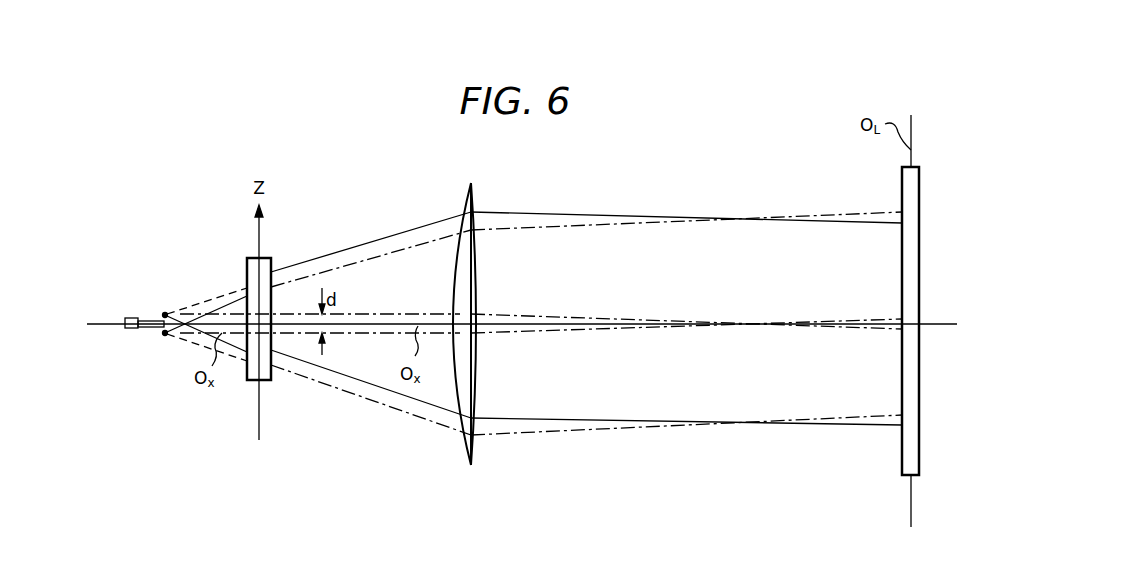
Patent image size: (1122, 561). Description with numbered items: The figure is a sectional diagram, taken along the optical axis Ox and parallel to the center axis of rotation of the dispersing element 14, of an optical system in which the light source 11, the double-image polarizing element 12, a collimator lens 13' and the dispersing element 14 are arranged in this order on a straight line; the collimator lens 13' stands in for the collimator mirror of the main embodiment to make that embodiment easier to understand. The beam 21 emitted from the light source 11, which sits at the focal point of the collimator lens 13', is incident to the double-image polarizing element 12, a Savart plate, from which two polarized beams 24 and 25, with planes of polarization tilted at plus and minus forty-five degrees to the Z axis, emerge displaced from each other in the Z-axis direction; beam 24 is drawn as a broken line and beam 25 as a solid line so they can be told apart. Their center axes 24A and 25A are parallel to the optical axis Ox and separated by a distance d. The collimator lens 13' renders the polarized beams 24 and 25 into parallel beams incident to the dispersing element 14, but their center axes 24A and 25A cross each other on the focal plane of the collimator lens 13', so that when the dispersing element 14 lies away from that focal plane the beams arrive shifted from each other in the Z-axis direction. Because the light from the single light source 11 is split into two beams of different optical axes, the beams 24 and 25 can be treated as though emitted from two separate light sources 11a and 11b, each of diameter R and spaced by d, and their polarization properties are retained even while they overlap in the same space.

The light source 11 is at (142, 332).
The apparent light source 11a is at (164, 337).
The apparent light source 11b is at (163, 312).
The double-image polarizing element 12 is at (273, 262).
The collimator lens 13' is at (489, 324).
The dispersing element 14 is at (900, 460).
The beam 21 is at (215, 296).
The polarized beam 24 is at (352, 400).
The center axis 24A is at (358, 334).
The polarized beam 25 is at (362, 246).
The center axis 25A is at (365, 314).